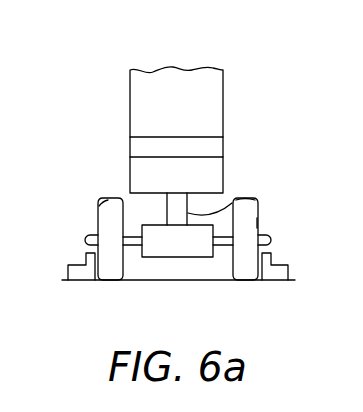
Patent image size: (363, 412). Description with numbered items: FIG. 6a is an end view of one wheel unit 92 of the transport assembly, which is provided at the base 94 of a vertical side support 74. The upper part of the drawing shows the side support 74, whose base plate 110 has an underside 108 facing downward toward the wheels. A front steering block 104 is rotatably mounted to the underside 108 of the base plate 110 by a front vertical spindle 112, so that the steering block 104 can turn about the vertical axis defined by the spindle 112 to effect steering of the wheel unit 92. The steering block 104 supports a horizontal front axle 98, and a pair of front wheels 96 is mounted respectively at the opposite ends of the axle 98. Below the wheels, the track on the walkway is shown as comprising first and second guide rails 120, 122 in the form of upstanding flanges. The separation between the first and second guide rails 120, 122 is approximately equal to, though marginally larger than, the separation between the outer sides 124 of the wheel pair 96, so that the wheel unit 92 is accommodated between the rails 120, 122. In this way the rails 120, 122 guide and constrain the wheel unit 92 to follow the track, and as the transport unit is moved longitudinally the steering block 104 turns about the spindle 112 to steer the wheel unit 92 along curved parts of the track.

The side support 74 is at (177, 77).
The base 94 is at (223, 146).
The base plate 110 is at (130, 168).
The underside 108 is at (207, 202).
The front steering block 104 is at (177, 258).
The front wheels 96 is at (114, 280).
The front vertical spindle 112 is at (258, 204).
The outer sides 124 is at (95, 208).
The wheel unit 92 is at (72, 240).
The front axle 98 is at (133, 246).
The first guide rail 120 is at (77, 280).
The second guide rail 122 is at (281, 280).